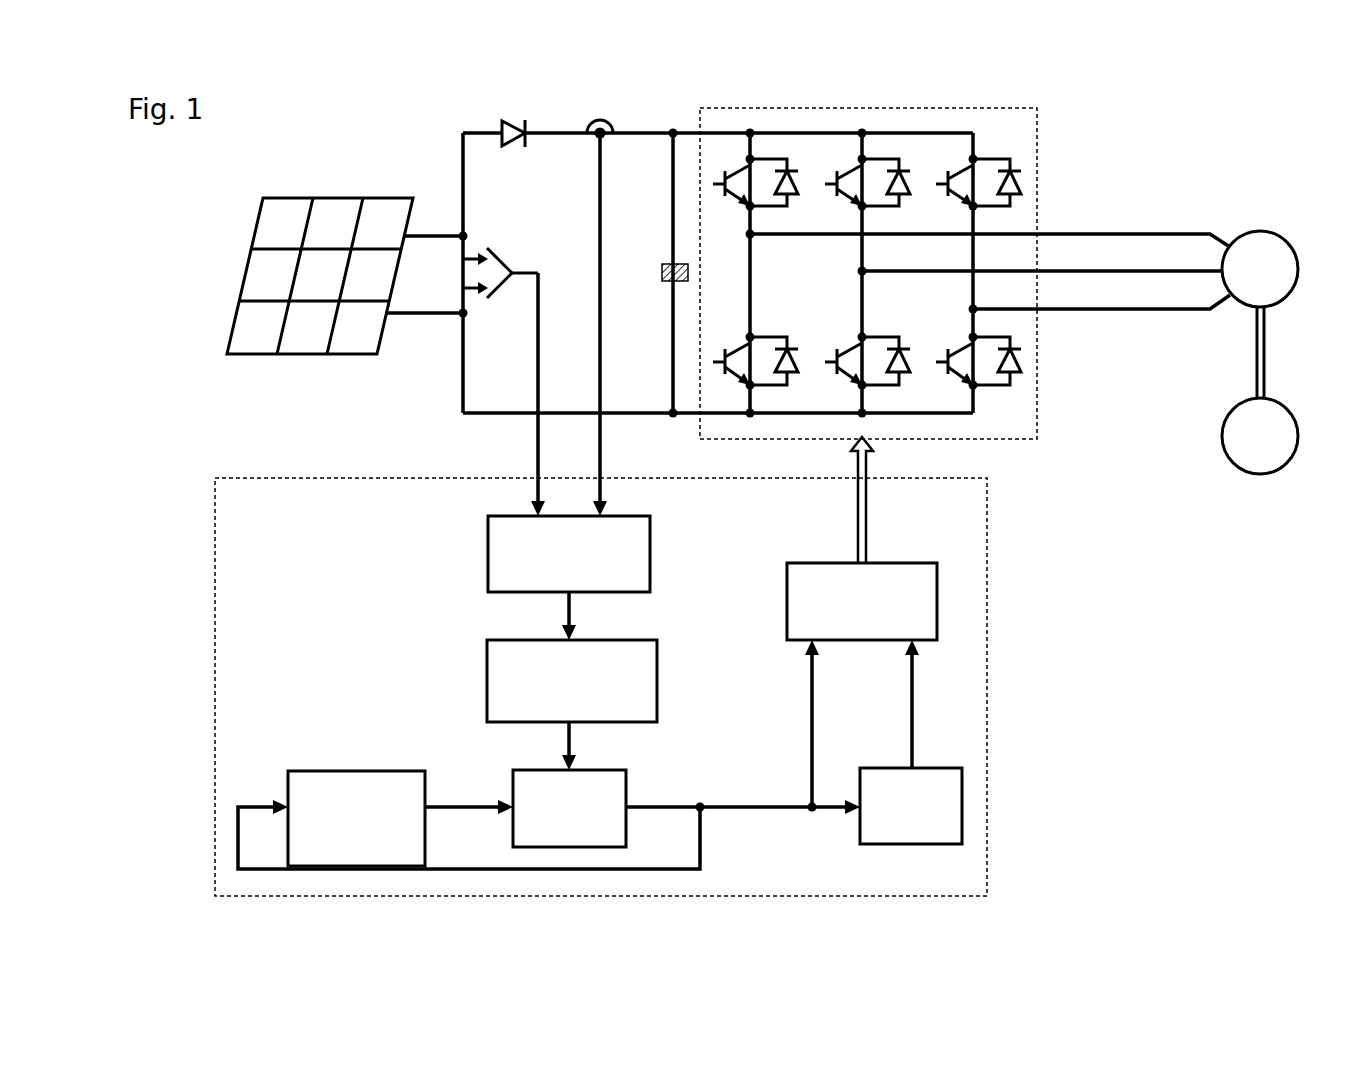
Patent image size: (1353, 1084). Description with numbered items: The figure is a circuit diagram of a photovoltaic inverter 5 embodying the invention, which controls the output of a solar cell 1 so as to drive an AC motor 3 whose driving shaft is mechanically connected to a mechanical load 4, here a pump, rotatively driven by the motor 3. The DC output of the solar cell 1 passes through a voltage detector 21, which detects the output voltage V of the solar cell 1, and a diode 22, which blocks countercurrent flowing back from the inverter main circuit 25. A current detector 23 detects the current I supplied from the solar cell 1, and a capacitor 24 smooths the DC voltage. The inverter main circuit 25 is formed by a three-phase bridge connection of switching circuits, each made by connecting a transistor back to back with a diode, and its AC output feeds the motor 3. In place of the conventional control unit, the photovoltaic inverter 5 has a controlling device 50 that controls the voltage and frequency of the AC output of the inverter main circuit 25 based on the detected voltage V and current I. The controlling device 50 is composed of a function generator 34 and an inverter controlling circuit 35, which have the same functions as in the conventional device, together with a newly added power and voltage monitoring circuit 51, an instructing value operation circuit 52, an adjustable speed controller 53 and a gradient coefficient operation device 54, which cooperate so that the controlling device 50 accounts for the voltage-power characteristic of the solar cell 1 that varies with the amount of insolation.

The solar cell 1 is at (340, 191).
The voltage detector 21 is at (507, 297).
The diode 22 is at (514, 151).
The current detector 23 is at (612, 145).
The capacitor 24 is at (649, 282).
The inverter main circuit 25 is at (1043, 152).
The AC motor 3 is at (1262, 224).
The mechanical load 4 is at (1259, 485).
The photovoltaic inverter 5 is at (1141, 515).
The function generator 34 is at (936, 761).
The inverter controlling circuit 35 is at (773, 592).
The controlling device 50 is at (993, 694).
The power and voltage monitoring circuit 51 is at (478, 552).
The instructing value operation circuit 52 is at (488, 677).
The adjustable speed controller 53 is at (633, 773).
The gradient coefficient operation device 54 is at (350, 764).